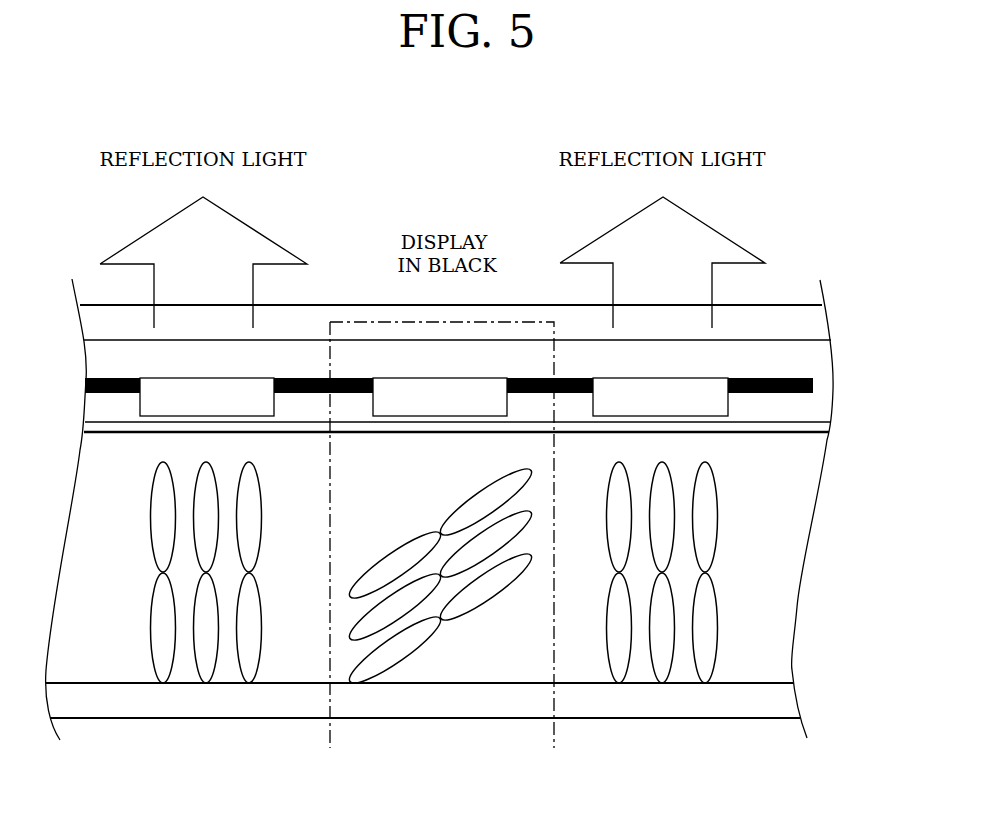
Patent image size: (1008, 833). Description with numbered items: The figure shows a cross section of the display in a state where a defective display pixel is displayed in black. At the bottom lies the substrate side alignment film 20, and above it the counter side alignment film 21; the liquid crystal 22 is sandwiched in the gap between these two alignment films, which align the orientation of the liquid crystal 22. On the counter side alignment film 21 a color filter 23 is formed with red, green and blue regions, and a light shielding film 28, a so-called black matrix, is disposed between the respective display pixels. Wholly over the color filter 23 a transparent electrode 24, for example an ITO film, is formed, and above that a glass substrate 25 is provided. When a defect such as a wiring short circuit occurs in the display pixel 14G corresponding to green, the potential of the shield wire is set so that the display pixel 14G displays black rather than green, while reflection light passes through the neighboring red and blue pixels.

The glass substrate 25 is at (798, 319).
The transparent electrode 24 is at (790, 361).
The light shielding film 28 is at (813, 387).
The color filter 23 is at (788, 412).
The counter side alignment film 21 is at (767, 432).
The liquid crystal 22 is at (742, 522).
The substrate side alignment film 20 is at (768, 697).
The display pixel 14G is at (554, 737).